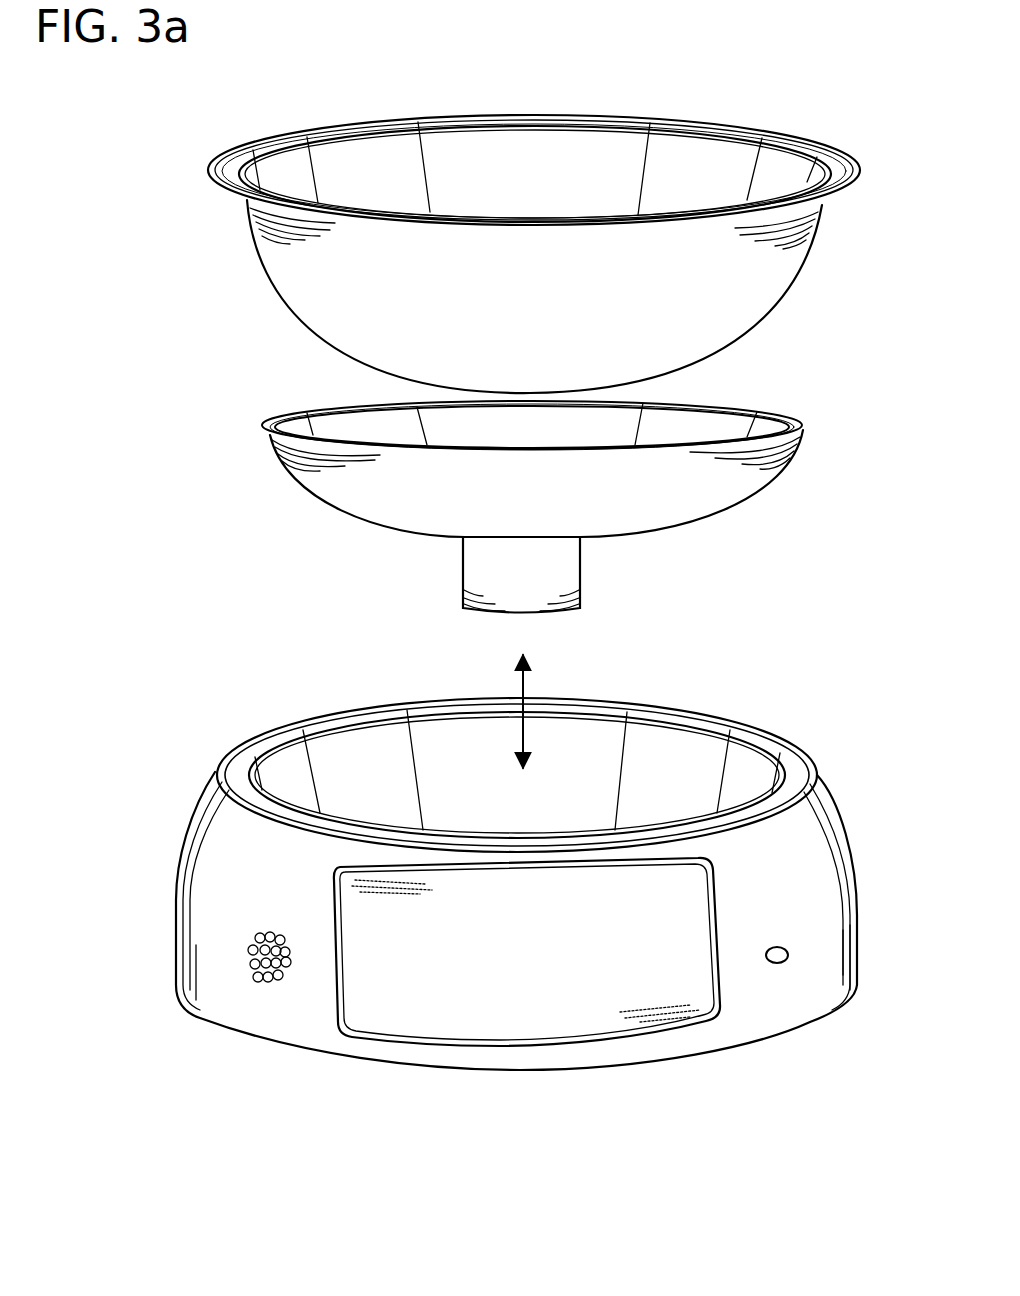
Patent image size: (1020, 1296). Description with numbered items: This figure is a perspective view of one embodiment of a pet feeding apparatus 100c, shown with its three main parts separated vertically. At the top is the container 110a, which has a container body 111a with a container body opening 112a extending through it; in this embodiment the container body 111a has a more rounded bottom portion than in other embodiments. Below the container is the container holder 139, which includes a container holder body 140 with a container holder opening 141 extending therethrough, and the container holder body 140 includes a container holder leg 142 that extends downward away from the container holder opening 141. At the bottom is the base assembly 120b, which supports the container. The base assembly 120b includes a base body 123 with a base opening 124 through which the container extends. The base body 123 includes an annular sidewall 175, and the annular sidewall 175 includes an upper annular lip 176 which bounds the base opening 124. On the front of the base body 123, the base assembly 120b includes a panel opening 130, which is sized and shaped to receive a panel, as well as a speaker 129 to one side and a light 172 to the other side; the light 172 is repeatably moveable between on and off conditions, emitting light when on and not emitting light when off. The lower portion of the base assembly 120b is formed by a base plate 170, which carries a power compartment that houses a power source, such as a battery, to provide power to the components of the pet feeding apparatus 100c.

The pet feeding apparatus 100c is at (148, 146).
The container 110a is at (176, 244).
The container body opening 112a is at (530, 146).
The container body 111a is at (293, 278).
The container holder 139 is at (186, 464).
The container holder body 140 is at (313, 477).
The container holder opening 141 is at (522, 420).
The container holder leg 142 is at (480, 574).
The base assembly 120b is at (131, 851).
The base opening 124 is at (568, 721).
The upper annular lip 176 is at (238, 770).
The annular sidewall 175 is at (822, 828).
The light 172 is at (777, 948).
The base body 123 is at (207, 902).
The panel opening 130 is at (540, 984).
The speaker 129 is at (268, 995).
The base plate 170 is at (437, 1082).